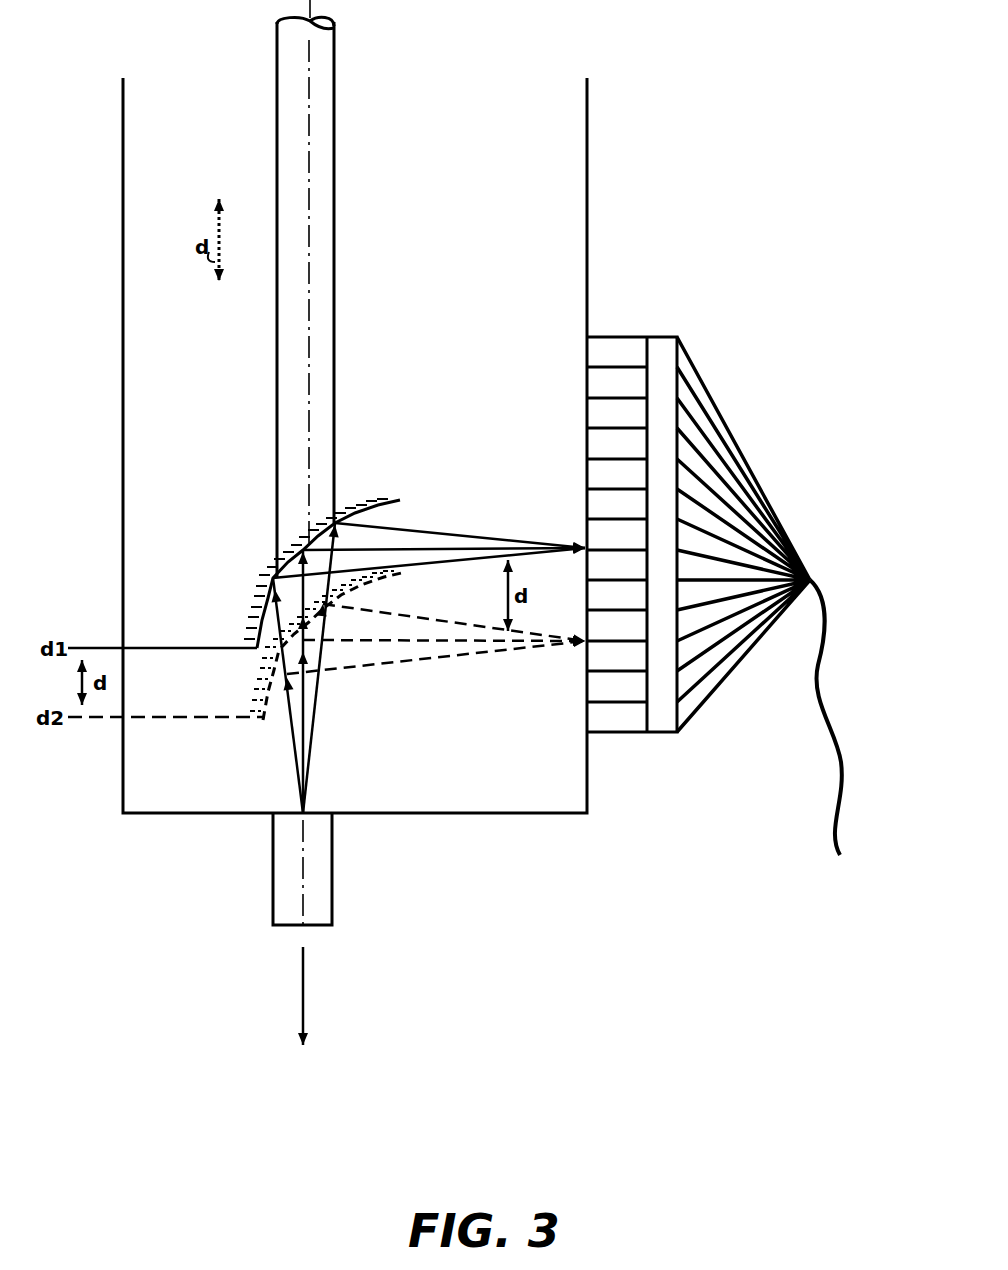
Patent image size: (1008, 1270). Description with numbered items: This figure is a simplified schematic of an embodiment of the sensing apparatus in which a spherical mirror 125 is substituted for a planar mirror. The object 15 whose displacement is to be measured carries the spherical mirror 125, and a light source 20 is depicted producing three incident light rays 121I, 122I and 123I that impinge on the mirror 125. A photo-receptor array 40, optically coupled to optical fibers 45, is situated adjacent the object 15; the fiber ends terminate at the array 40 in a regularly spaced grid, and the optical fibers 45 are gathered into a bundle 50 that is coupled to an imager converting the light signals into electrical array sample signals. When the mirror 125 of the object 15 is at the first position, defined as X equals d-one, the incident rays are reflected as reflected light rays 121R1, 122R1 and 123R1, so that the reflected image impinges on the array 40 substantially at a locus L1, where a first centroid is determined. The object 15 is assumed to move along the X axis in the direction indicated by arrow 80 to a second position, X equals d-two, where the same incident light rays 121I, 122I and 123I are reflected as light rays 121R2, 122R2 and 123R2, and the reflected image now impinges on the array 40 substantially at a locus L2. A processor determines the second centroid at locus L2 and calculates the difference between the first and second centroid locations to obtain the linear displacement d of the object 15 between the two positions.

The object 15 is at (137, 443).
The light source 20 is at (332, 882).
The photo-receptor array 40 is at (650, 337).
The optical fibers 45 is at (742, 440).
The bundle 50 is at (825, 650).
The arrow 80 is at (303, 1005).
The spherical mirror 125 is at (248, 612).
The incident light ray 121I is at (288, 748).
The incident light ray 122I is at (306, 755).
The incident light ray 123I is at (311, 733).
The reflected light ray 121R1 is at (450, 560).
The reflected light ray 122R1 is at (440, 555).
The reflected light ray 123R1 is at (427, 538).
The reflected light ray 121R2 is at (405, 663).
The reflected light ray 122R2 is at (420, 643).
The reflected light ray 123R2 is at (433, 622).
The locus L1 is at (583, 545).
The locus L2 is at (579, 655).